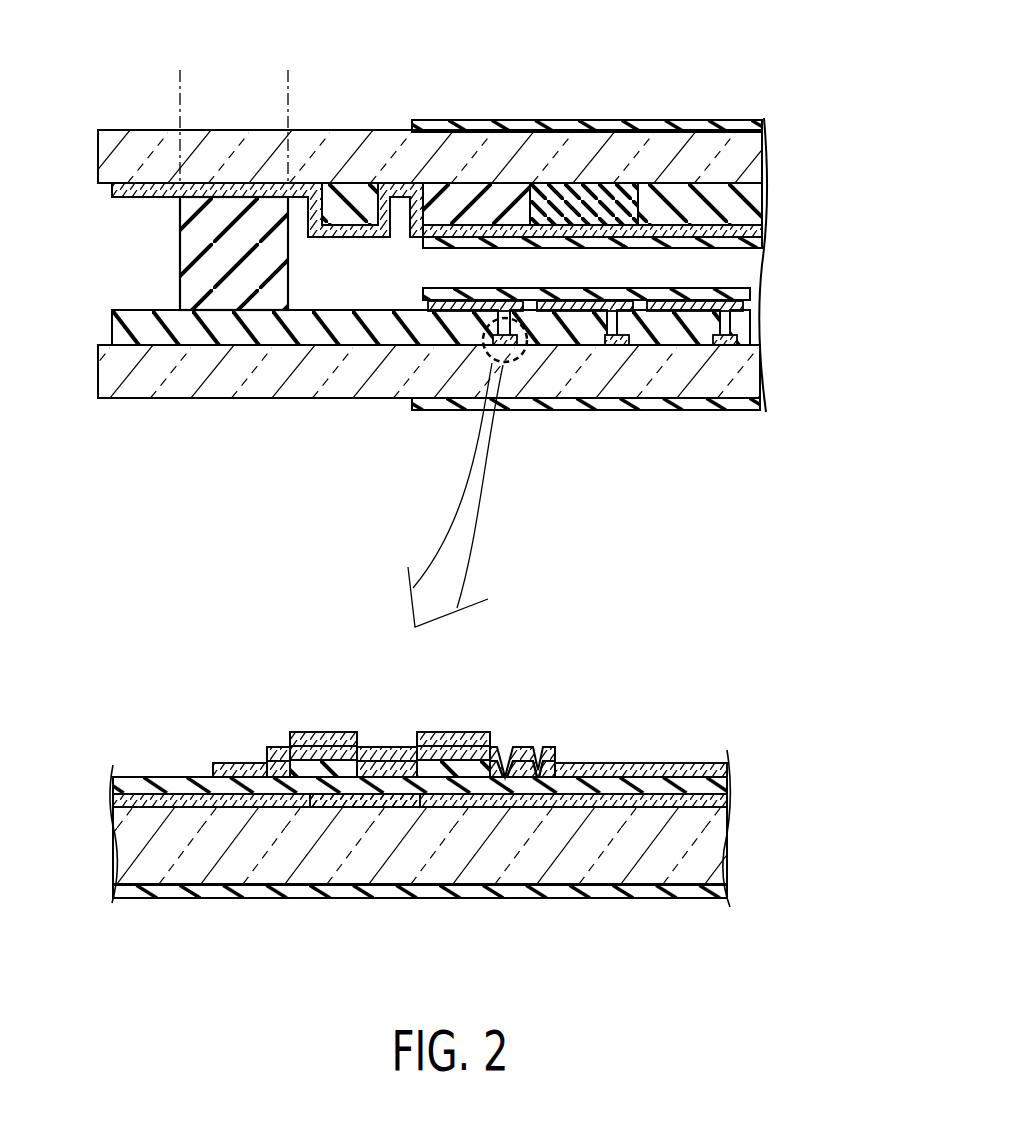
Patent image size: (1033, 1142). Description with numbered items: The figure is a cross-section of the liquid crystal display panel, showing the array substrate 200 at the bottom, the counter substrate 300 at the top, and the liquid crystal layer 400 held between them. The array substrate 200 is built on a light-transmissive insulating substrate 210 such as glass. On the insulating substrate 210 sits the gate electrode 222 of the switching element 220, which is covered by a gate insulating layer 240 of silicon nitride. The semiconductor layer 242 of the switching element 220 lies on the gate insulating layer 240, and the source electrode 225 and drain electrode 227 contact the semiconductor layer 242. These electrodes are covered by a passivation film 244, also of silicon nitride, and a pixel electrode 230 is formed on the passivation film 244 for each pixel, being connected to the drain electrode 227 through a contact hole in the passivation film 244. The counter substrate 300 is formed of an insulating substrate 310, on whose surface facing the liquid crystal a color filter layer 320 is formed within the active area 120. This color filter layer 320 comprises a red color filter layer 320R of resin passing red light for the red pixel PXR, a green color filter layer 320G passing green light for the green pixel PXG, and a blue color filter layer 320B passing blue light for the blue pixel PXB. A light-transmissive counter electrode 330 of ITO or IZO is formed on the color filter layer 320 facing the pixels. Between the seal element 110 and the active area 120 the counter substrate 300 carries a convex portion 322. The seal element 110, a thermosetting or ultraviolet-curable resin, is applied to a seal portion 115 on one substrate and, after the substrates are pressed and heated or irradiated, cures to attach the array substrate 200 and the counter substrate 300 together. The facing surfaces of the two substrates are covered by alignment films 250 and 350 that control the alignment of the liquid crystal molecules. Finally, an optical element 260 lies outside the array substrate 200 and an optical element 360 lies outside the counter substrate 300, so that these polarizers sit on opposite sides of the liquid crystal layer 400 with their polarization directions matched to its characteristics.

The seal element 110 is at (180, 275).
The seal portion 115 is at (288, 64).
The active area 120 is at (447, 50).
The red color pixel PXR is at (418, 105).
The green color pixel PXG is at (638, 105).
The blue color pixel PXB is at (753, 105).
The array substrate 200 is at (770, 375).
The insulating substrate 210 is at (112, 380).
The switching element 220 is at (503, 350).
The gate electrode 222 is at (387, 808).
The source electrode 225 is at (333, 743).
The drain electrode 227 is at (470, 752).
The pixel electrode 230 is at (444, 303).
The gate insulating layer 240 is at (712, 801).
The semiconductor layer 242 is at (387, 770).
The passivation film 244 is at (745, 330).
The alignment film 250 is at (740, 295).
The optical element 260 is at (752, 404).
The counter substrate 300 is at (770, 157).
The insulating substrate 310 is at (112, 158).
The color filter layer 320 is at (469, 228).
The red color filter layer 320R is at (477, 213).
The green color filter layer 320G is at (583, 213).
The blue color filter layer 320B is at (686, 213).
The convex portion 322 is at (352, 215).
The counter electrode 330 is at (752, 228).
The alignment film 350 is at (752, 243).
The optical element 360 is at (750, 127).
The liquid crystal layer 400 is at (740, 270).